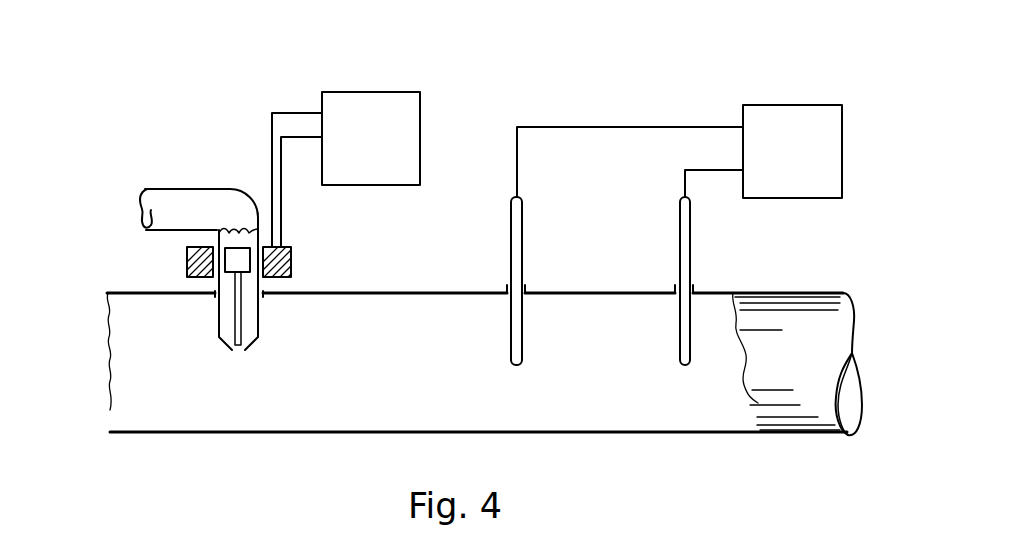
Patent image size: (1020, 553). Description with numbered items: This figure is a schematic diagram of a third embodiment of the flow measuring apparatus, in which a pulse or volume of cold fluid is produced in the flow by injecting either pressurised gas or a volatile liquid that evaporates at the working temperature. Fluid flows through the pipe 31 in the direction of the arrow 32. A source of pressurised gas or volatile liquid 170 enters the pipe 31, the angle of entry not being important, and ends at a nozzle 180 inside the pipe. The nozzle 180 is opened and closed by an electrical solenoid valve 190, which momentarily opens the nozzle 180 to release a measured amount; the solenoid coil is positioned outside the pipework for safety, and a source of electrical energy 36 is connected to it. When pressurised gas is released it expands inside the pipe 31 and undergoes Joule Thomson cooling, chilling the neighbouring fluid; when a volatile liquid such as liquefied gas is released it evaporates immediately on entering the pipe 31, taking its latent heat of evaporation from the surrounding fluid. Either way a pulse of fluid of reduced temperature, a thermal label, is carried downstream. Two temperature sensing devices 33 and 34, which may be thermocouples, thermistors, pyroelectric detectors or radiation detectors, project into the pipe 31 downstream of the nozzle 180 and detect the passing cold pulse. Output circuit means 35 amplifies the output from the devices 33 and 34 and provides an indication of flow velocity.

The pipe 31 is at (138, 288).
The arrow 32 is at (100, 360).
The temperature sensing device 33 is at (520, 360).
The temperature sensing device 34 is at (680, 358).
The output circuit means 35 is at (842, 138).
The source of electrical energy 36 is at (420, 131).
The source of pressurised gas or volatile liquid 170 is at (135, 210).
The nozzle 180 is at (237, 353).
The electrical solenoid valve 190 is at (293, 257).